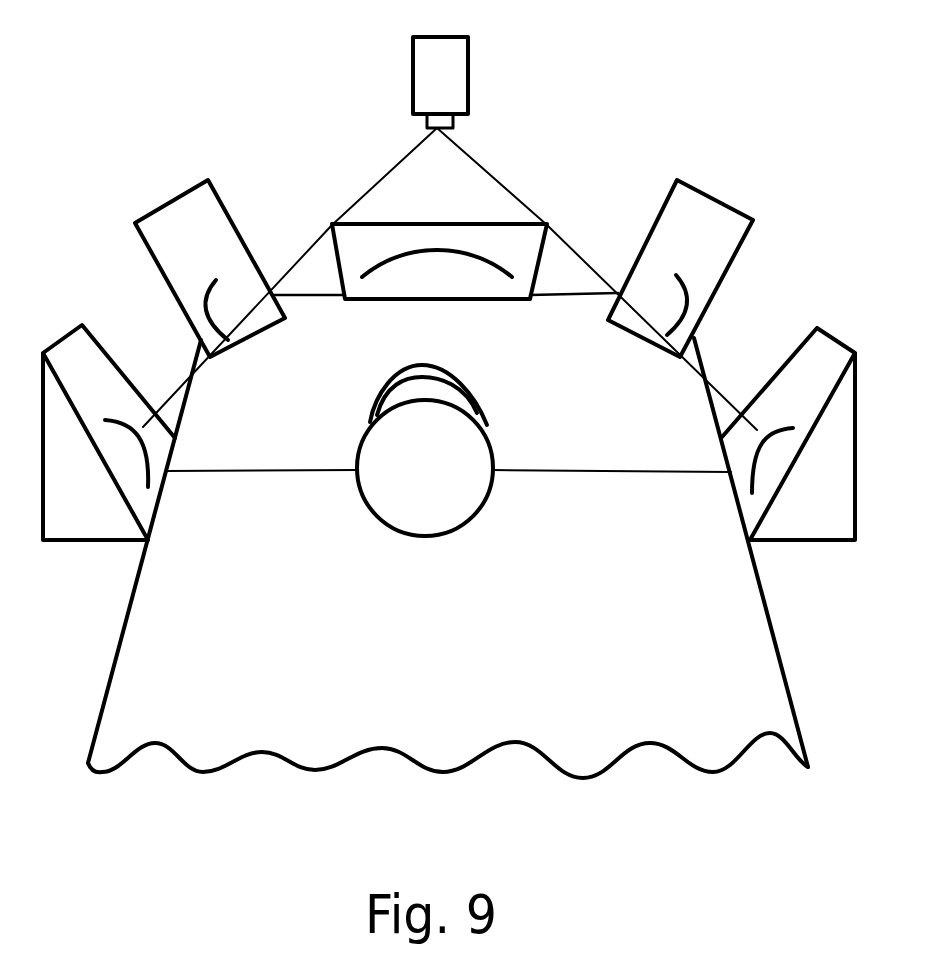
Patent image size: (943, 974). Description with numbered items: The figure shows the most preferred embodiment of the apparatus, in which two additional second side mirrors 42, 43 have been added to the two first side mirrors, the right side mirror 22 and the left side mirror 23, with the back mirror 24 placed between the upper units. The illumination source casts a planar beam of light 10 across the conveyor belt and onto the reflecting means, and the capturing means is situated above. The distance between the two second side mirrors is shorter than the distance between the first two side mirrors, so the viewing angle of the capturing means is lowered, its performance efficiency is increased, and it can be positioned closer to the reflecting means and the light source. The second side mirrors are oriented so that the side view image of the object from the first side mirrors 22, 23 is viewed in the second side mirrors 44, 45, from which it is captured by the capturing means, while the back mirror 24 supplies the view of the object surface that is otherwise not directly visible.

The planar beam of light 10 is at (508, 183).
The right side mirror 22 is at (765, 452).
The left side mirror 23 is at (130, 442).
The back mirror 24 is at (333, 256).
The second side mirror 42 is at (697, 215).
The second side mirror 43 is at (178, 218).
The second side mirror 44 is at (698, 298).
The second side mirror 45 is at (196, 307).